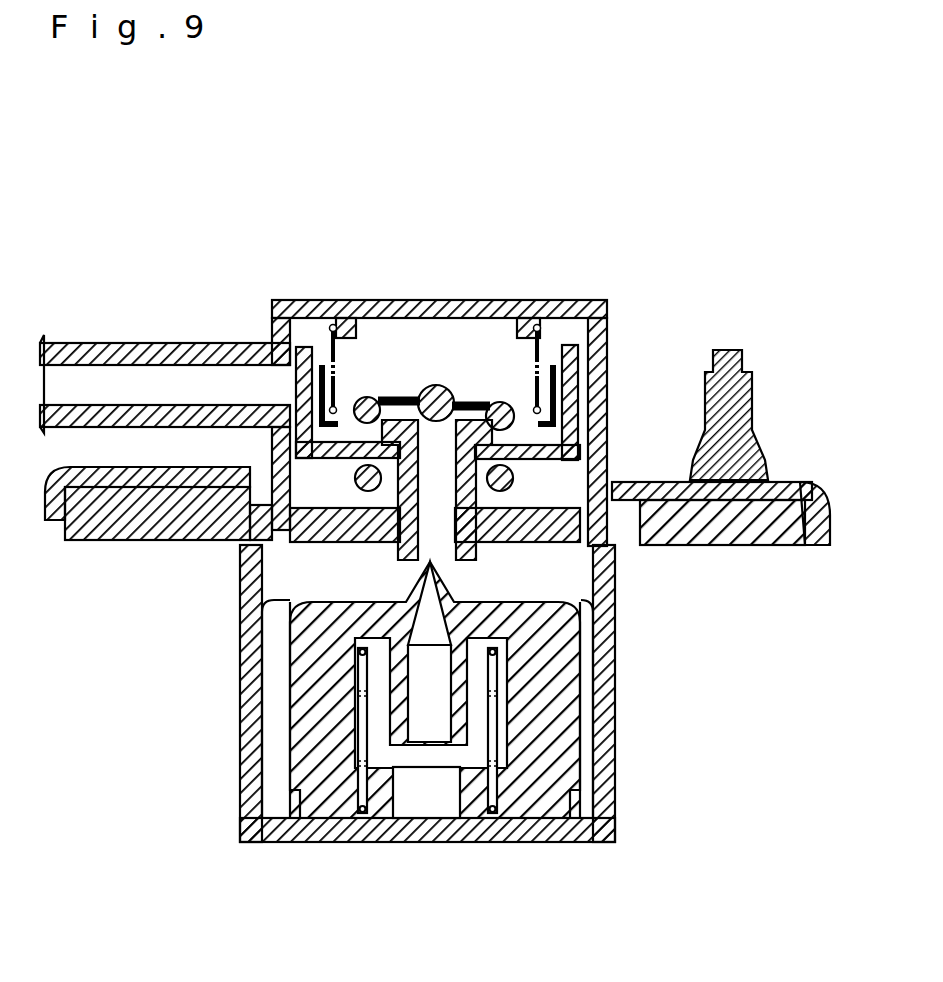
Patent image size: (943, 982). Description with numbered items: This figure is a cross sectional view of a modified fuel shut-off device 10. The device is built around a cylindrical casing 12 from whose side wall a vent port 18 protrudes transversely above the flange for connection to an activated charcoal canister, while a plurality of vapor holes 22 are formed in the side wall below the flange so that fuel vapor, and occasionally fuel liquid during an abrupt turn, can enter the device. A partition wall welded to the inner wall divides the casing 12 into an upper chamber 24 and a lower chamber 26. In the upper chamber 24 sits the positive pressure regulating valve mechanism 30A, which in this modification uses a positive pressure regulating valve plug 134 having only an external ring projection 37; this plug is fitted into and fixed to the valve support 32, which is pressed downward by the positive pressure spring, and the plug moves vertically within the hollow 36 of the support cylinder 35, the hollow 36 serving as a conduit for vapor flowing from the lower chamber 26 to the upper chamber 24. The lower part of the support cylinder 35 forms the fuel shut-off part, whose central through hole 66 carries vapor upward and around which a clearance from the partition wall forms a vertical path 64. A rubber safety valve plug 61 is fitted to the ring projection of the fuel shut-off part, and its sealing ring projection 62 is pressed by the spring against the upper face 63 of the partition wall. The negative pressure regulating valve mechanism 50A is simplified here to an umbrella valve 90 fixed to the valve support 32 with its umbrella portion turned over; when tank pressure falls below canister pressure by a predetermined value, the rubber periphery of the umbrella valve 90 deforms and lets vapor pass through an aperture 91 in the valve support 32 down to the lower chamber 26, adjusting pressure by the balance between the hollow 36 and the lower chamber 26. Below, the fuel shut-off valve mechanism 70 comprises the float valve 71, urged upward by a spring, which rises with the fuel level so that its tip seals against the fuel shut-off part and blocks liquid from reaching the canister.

The fuel shut-off device 10 is at (692, 252).
The casing 12 is at (605, 680).
The vent port 18 is at (150, 345).
The vapor holes 22 is at (258, 578).
The upper chamber 24 is at (312, 470).
The lower chamber 26 is at (255, 710).
The positive pressure regulating valve mechanism 30A is at (567, 334).
The valve support 32 is at (578, 358).
The support cylinder 35 is at (568, 352).
The hollow 36 is at (350, 340).
The external ring projection 37 is at (580, 425).
The negative pressure regulating valve mechanism 50A is at (463, 321).
The safety valve plug 61 is at (535, 478).
The sealing ring projection 62 is at (510, 486).
The upper face of the partition wall 63 is at (352, 528).
The vertical path 64 is at (466, 571).
The through hole 66 is at (420, 566).
The fuel shut-off valve mechanism 70 is at (600, 622).
The float valve 71 is at (602, 745).
The umbrella valve 90 is at (432, 392).
The aperture 91 is at (450, 392).
The positive pressure regulating valve plug 134 is at (580, 378).